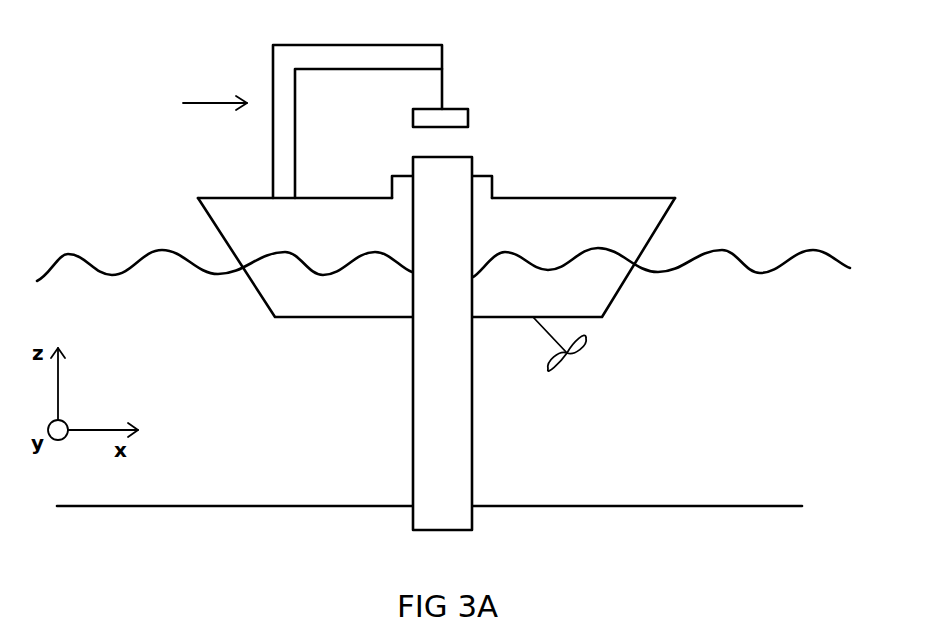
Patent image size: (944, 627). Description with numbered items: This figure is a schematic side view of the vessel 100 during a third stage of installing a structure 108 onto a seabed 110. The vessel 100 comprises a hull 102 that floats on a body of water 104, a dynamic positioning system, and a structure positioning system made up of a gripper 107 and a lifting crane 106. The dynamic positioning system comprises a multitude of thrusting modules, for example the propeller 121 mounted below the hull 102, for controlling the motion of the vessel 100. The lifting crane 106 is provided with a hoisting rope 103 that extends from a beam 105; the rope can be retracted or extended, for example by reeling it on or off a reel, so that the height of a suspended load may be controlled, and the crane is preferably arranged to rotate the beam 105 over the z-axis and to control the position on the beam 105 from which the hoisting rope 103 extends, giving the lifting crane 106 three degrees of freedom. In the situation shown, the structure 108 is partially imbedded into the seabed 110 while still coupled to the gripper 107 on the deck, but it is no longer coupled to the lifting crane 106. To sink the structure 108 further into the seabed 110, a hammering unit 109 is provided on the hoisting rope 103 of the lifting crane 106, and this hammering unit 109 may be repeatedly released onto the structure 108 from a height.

The vessel 100 is at (514, 207).
The hull 102 is at (463, 187).
The hoisting rope 103 is at (503, 64).
The body of water 104 is at (443, 237).
The beam 105 is at (312, 111).
The lifting crane 106 is at (193, 107).
The gripper 107 is at (489, 139).
The structure 108 is at (332, 343).
The hammering unit 109 is at (493, 89).
The seabed 110 is at (429, 471).
The propeller 121 is at (621, 356).